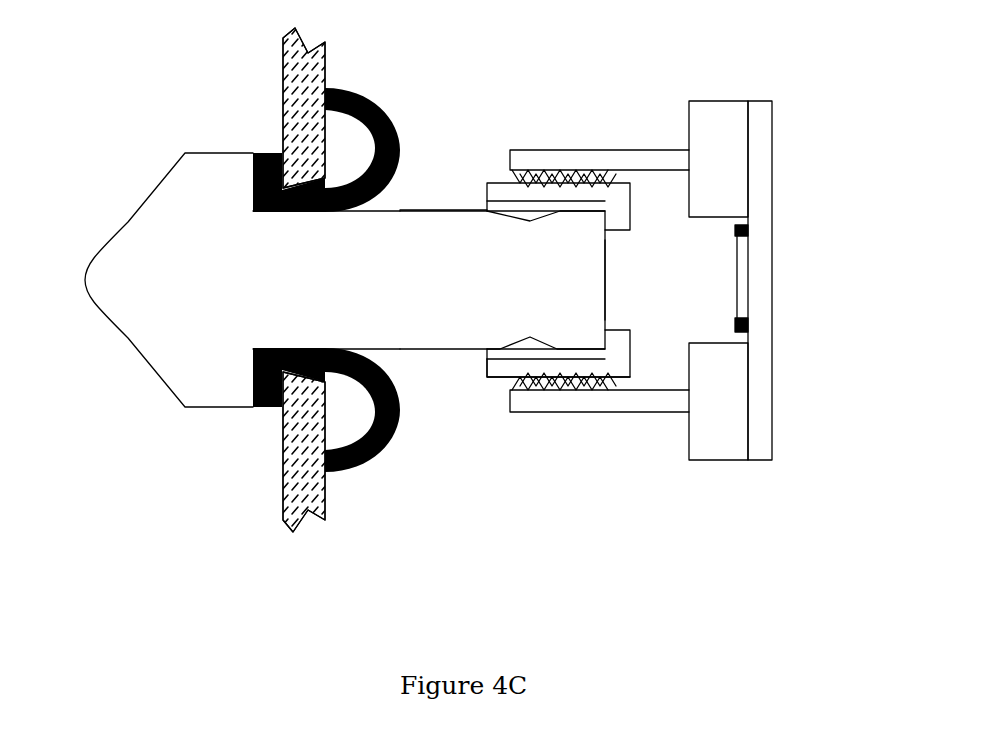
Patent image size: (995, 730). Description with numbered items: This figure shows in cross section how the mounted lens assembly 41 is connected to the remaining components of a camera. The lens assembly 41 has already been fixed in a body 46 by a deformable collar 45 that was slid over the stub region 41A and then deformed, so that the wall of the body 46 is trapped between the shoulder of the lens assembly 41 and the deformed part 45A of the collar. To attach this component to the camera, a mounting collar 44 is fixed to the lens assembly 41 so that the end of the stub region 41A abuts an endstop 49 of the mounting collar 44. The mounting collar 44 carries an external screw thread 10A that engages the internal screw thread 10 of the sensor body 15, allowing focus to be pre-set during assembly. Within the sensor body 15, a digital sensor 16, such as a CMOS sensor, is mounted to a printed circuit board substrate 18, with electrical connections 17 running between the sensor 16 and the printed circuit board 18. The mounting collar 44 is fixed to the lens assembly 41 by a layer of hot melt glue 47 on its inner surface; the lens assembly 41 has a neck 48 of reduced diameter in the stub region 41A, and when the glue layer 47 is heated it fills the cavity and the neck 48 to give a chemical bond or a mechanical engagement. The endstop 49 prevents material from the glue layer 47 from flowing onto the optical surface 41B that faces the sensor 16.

The lens assembly 41 is at (146, 135).
The stub region 41A is at (435, 213).
The optical surface 41B is at (620, 255).
The mounting collar 44 is at (494, 406).
The deformable collar 45 is at (250, 142).
The deformed part of the collar 45A is at (393, 102).
The body 46 is at (336, 44).
The layer of hot melt glue 47 is at (529, 188).
The neck 48 is at (520, 232).
The endstop 49 is at (646, 190).
The internal screw thread 10 is at (575, 386).
The external screw thread 10A is at (583, 166).
The sensor body 15 is at (655, 115).
The digital sensor 16 is at (762, 295).
The electrical connections 17 is at (763, 221).
The printed circuit board substrate 18 is at (787, 379).